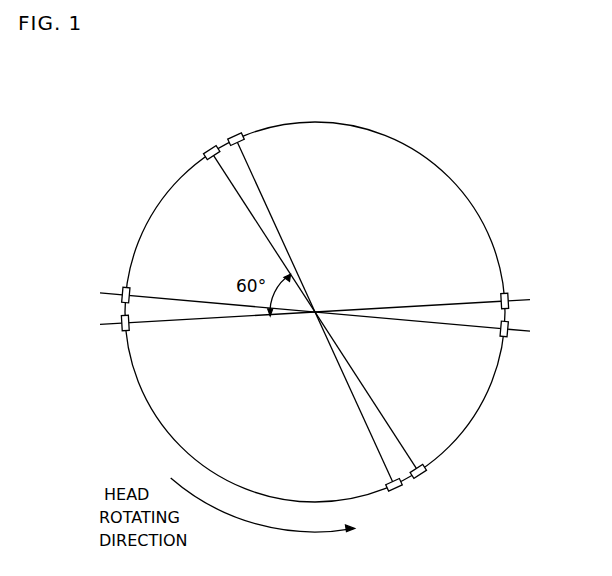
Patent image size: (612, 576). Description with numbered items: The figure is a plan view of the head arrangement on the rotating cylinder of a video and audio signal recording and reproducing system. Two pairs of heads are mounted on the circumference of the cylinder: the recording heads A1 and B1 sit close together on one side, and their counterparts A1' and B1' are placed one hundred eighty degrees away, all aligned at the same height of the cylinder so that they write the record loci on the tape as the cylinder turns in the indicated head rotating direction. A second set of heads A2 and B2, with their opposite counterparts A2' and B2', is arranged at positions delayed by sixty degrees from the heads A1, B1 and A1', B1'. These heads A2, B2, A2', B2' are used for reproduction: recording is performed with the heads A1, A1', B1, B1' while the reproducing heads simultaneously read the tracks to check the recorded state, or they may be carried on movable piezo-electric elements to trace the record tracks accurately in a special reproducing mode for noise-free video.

The recording head A1 is at (99, 325).
The recording head B1 is at (100, 296).
The recording head A1' is at (531, 293).
The recording head B1' is at (531, 324).
The reproducing head A2 is at (203, 141).
The reproducing head B2 is at (232, 124).
The reproducing head A2' is at (433, 486).
The reproducing head B2' is at (405, 506).